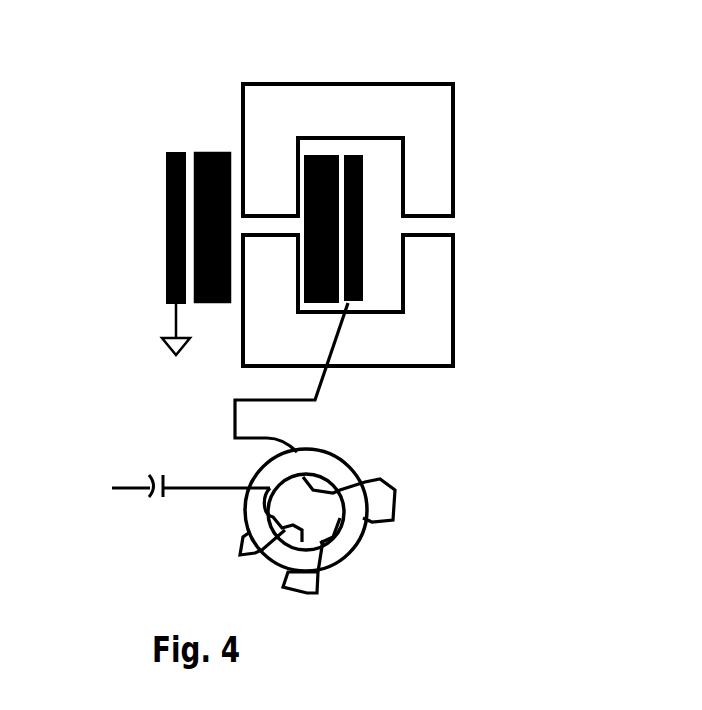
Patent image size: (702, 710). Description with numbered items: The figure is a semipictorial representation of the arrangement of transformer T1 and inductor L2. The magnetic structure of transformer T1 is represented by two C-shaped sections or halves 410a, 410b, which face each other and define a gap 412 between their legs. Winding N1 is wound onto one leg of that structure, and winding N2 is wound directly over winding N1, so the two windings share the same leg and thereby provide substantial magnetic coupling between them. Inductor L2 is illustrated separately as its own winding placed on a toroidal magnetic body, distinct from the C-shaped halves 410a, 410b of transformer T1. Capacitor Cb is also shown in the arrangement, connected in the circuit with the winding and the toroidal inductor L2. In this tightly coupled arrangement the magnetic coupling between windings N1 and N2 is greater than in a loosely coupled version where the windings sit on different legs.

The core half 410a is at (407, 82).
The core half 410b is at (440, 368).
The gap 412 is at (443, 223).
The transformer T1 is at (136, 254).
The winding N1 is at (212, 147).
The winding N2 is at (170, 147).
The capacitor Cb is at (191, 510).
The inductor L2 is at (326, 521).